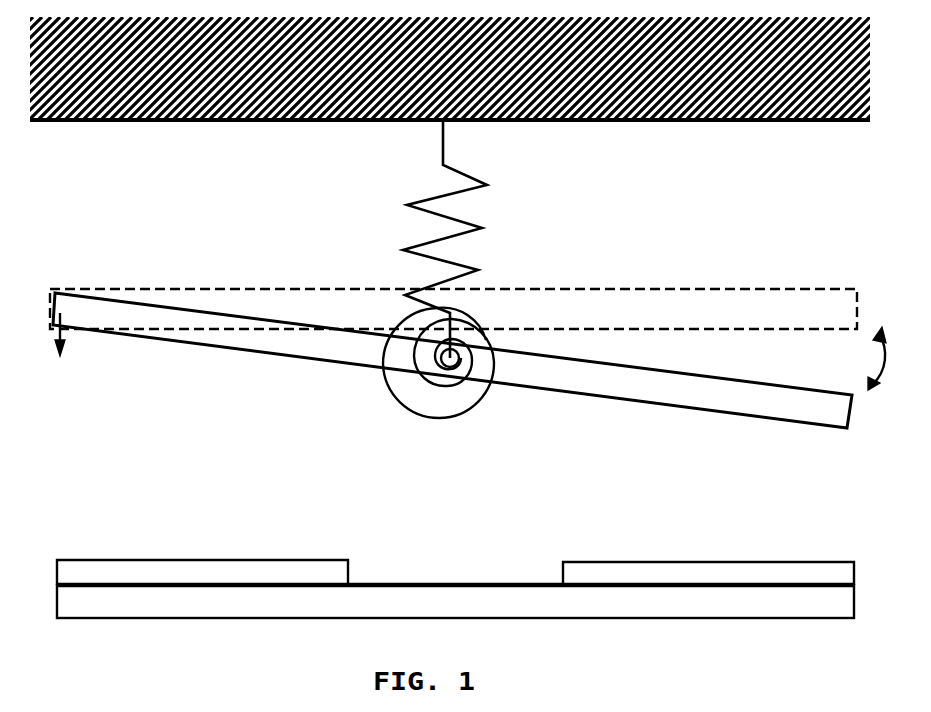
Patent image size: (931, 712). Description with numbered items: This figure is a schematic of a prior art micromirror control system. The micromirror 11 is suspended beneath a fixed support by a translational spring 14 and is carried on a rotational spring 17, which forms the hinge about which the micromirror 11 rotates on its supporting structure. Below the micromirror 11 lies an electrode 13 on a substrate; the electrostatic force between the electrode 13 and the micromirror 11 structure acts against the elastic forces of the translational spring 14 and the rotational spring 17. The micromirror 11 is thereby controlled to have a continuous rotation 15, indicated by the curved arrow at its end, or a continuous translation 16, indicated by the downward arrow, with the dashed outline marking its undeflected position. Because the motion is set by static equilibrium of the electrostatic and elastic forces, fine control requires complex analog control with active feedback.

The micromirror 11 is at (567, 278).
The electrode 13 is at (170, 555).
The translational spring 14 is at (477, 168).
The rotation 15 is at (870, 345).
The translation 16 is at (32, 337).
The rotational spring 17 is at (429, 395).